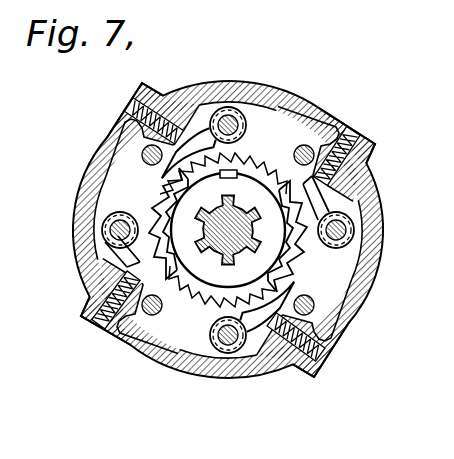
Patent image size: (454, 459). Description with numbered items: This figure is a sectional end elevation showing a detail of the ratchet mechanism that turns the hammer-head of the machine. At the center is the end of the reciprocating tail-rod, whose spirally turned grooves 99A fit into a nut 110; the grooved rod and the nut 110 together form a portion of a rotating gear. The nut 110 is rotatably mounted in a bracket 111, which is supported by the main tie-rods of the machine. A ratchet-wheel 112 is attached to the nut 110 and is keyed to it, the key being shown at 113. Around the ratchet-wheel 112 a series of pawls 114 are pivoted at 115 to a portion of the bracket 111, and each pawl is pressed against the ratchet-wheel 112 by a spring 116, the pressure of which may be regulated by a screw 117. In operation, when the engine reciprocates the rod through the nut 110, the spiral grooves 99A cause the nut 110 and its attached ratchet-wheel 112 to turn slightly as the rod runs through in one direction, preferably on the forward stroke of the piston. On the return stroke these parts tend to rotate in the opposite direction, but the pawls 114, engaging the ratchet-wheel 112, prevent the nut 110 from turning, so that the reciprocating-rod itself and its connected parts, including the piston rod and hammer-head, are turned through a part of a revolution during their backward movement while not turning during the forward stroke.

The spirally turned grooves 99A is at (205, 252).
The nut 110 is at (182, 212).
The bracket 111 is at (128, 128).
The ratchet-wheel 112 is at (173, 180).
The key 113 is at (234, 173).
The pawls 114 is at (327, 205).
The pivot 115 is at (355, 232).
The springs 116 is at (334, 175).
The screws 117 is at (354, 132).